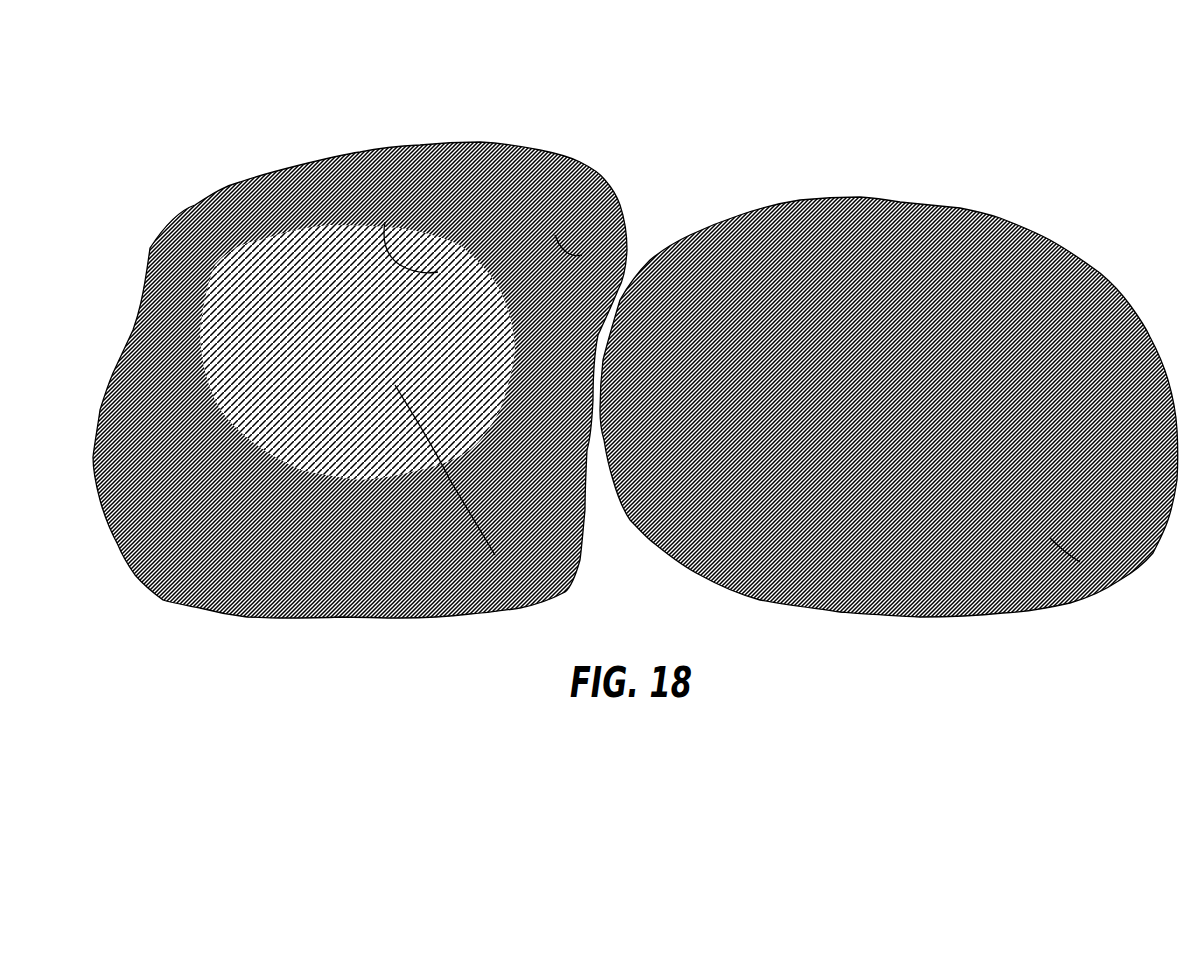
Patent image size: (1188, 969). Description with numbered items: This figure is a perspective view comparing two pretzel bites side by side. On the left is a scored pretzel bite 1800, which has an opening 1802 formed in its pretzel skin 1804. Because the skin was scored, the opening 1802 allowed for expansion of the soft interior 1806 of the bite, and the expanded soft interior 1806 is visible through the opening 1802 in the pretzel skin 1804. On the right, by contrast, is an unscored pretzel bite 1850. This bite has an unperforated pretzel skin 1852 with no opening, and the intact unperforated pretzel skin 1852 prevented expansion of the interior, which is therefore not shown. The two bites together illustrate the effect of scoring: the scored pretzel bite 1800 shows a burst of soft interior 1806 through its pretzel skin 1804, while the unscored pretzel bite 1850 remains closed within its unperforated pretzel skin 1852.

The scored pretzel bite 1800 is at (238, 188).
The opening 1802 is at (380, 217).
The pretzel skin 1804 is at (560, 243).
The soft interior 1806 is at (390, 378).
The unscored pretzel bite 1850 is at (1048, 237).
The unperforated pretzel skin 1852 is at (1062, 543).